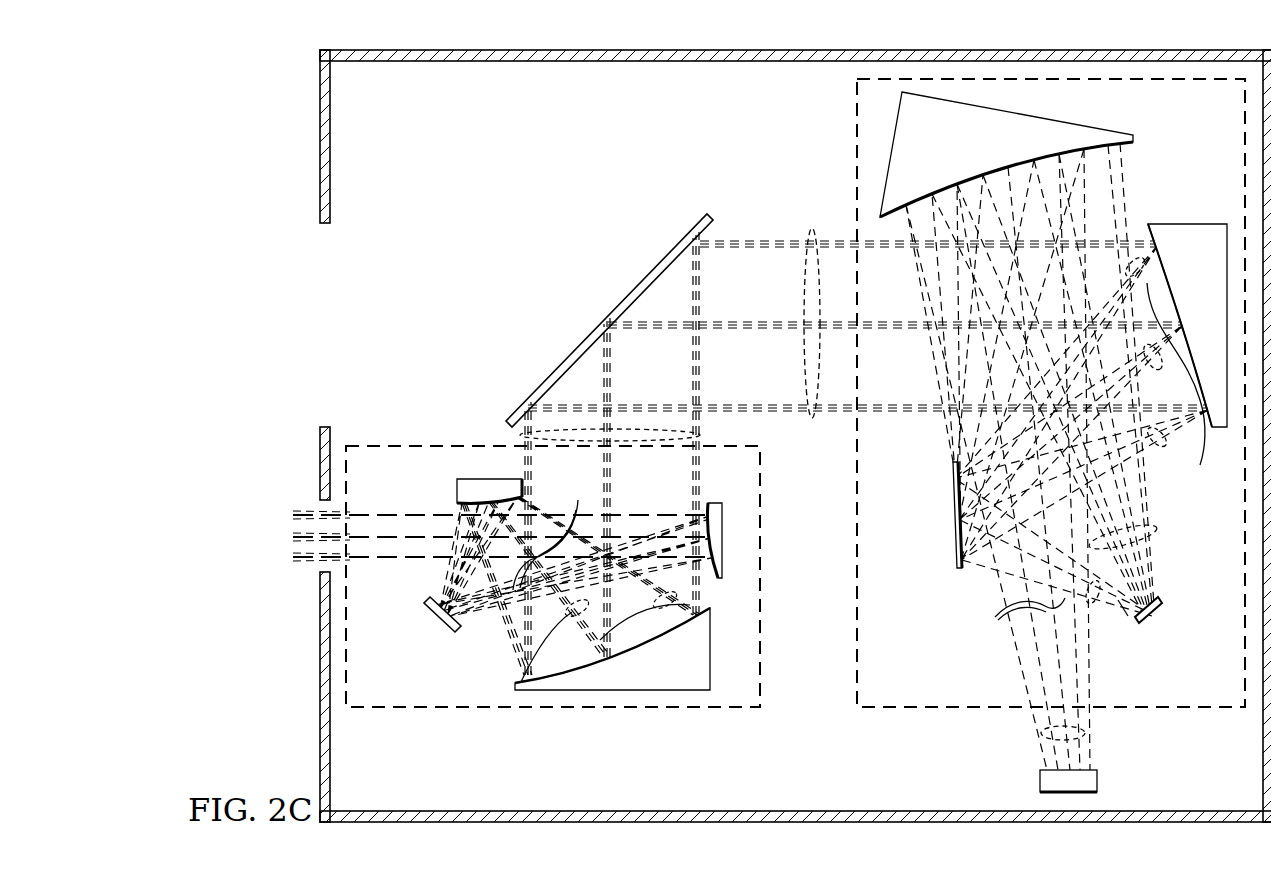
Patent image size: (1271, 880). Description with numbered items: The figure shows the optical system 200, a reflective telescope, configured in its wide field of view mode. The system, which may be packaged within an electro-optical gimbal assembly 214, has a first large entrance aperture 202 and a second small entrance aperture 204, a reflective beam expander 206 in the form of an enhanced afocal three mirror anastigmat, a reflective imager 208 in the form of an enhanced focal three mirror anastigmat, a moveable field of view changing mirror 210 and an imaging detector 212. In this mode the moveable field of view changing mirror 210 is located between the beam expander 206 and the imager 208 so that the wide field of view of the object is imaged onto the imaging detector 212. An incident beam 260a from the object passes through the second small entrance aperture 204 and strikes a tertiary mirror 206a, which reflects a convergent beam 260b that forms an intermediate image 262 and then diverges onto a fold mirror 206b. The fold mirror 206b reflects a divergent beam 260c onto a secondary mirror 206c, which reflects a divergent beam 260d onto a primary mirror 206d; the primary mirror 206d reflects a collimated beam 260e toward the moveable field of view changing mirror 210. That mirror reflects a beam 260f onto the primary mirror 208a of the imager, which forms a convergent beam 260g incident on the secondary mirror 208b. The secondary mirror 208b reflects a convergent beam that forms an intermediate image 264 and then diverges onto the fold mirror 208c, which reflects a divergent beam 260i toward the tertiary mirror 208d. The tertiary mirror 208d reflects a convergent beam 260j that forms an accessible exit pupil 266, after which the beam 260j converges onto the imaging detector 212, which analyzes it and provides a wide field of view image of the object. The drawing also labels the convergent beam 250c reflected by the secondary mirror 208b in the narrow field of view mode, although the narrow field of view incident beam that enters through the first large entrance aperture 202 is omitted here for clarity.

The optical system 200 is at (265, 109).
The first (large) entrance aperture 202 is at (319, 223).
The second (small) entrance aperture 204 is at (318, 566).
The reflective beam expander 206 is at (766, 613).
The tertiary mirror 206a is at (716, 503).
The fold mirror 206b is at (428, 620).
The secondary mirror 206c is at (455, 490).
The primary mirror 206d is at (690, 678).
The reflective imager 208 is at (852, 528).
The primary mirror 208a is at (1192, 222).
The secondary mirror 208b is at (953, 536).
The fold mirror 208c is at (1155, 623).
The tertiary mirror 208d is at (970, 144).
The moveable field of view changing mirror 210 is at (625, 302).
The imaging detector 212 is at (1097, 780).
The electro-optical gimbal assembly 214 is at (319, 692).
The convergent beam 250c is at (1095, 603).
The incident beam 260a is at (290, 510).
The convergent beam 260b is at (495, 622).
The divergent beam 260c is at (445, 573).
The divergent beam 260d is at (505, 625).
The collimated beam 260e is at (700, 435).
The beam 260f is at (811, 228).
The convergent beam 260g is at (1147, 283).
The divergent beam 260i is at (1160, 527).
The convergent beam 260j is at (1040, 734).
The intermediate image 262 is at (553, 532).
The intermediate image 264 is at (1120, 613).
The accessible exit pupil 266 is at (1012, 618).